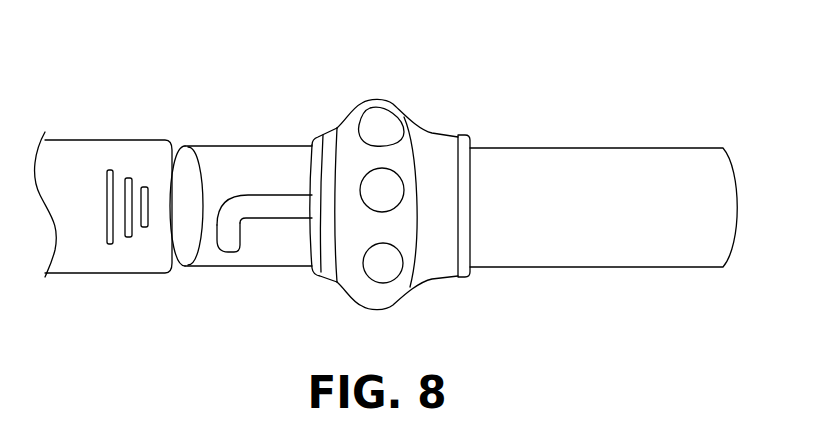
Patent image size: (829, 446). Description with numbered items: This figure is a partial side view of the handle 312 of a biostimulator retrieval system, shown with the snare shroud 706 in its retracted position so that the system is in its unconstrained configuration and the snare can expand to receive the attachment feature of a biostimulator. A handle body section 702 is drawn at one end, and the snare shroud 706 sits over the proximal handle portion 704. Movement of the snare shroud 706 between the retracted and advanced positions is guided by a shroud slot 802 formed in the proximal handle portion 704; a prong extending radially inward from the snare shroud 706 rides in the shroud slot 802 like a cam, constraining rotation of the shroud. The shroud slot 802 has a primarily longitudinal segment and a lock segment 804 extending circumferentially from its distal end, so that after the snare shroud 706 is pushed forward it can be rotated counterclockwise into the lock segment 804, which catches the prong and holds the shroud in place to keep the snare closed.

The tool assembly 312 is at (478, 47).
The first body portion 702 is at (100, 153).
The proximal handle portion 704 is at (602, 188).
The snare shroud 706 is at (428, 127).
The shroud slot 802 is at (258, 208).
The lock segment 804 is at (230, 237).